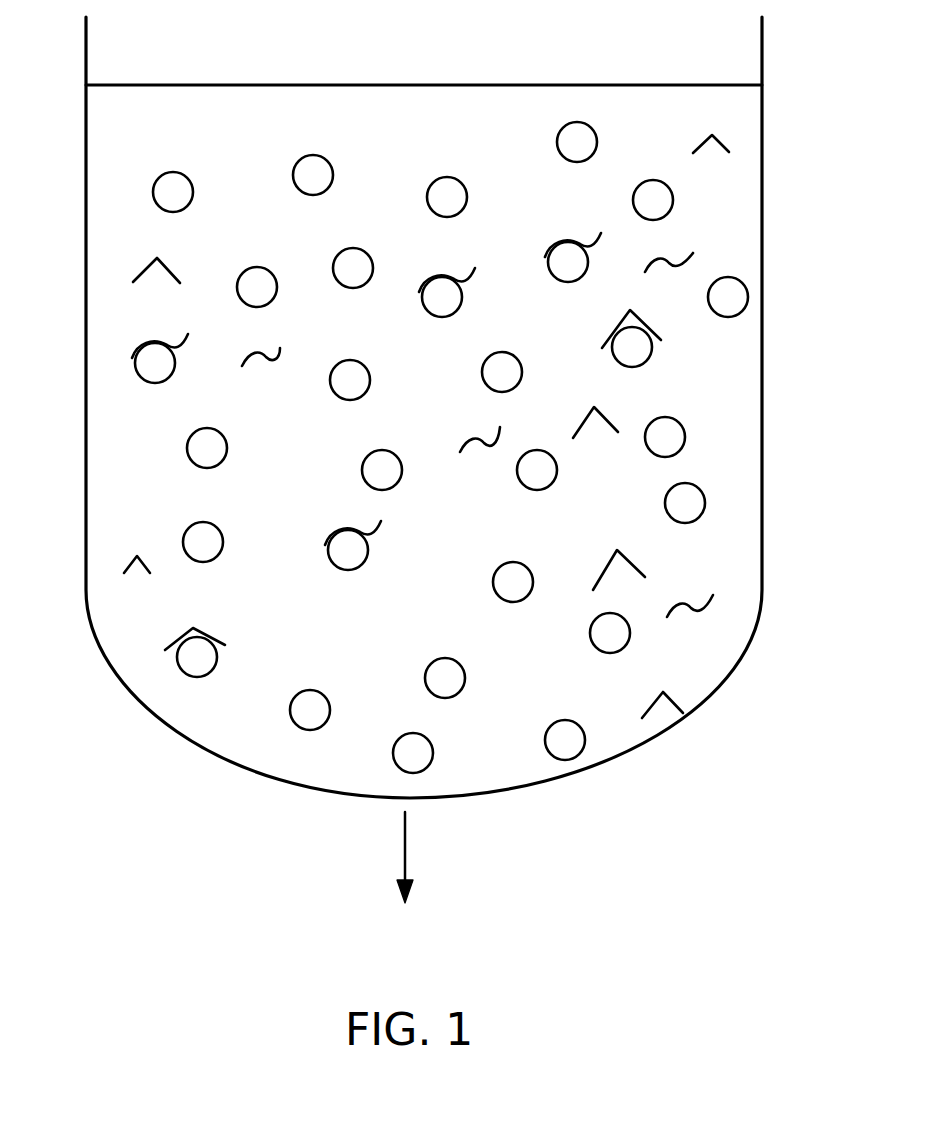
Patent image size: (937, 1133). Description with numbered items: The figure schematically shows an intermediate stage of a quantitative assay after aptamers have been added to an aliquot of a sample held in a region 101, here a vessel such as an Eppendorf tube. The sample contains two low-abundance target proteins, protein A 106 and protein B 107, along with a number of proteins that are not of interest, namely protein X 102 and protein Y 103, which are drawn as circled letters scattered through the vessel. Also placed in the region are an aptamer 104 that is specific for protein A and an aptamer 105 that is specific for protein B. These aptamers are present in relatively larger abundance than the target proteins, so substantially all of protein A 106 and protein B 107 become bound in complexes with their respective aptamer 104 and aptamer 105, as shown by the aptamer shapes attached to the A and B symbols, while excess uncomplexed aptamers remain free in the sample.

The region 101 is at (762, 103).
The protein X 102 is at (748, 290).
The protein Y 103 is at (706, 500).
The aptamer specific for protein A 104 is at (690, 258).
The aptamer specific for protein B 105 is at (621, 555).
The target protein A 106 is at (588, 257).
The target protein B 107 is at (652, 352).